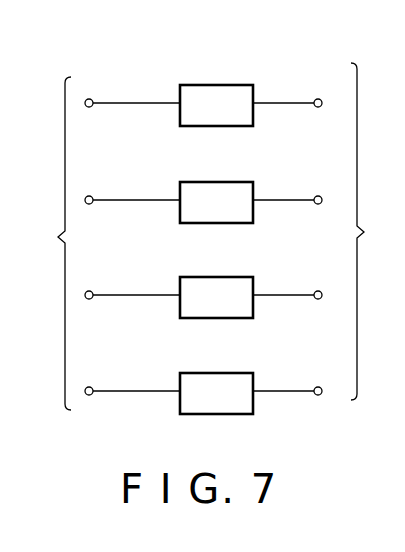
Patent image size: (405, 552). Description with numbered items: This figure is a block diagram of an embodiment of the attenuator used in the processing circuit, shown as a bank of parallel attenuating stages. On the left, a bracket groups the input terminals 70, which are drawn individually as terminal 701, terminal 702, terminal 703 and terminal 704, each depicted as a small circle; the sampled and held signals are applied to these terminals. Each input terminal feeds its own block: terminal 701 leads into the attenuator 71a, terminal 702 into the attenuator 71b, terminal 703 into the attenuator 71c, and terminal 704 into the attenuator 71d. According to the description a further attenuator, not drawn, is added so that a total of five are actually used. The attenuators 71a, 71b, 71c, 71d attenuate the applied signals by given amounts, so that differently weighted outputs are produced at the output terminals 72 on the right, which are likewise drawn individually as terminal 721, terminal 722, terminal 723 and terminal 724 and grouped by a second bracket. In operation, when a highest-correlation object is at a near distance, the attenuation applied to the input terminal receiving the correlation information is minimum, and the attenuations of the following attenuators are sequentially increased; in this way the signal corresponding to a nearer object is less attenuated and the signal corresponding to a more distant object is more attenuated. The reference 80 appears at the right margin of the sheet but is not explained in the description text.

The terminals 70 is at (44, 243).
The terminal 701 is at (126, 87).
The terminal 702 is at (126, 184).
The terminal 703 is at (126, 280).
The terminal 704 is at (126, 376).
The attenuator 71a is at (218, 92).
The attenuator 71b is at (212, 183).
The attenuator 71c is at (212, 280).
The attenuator 71d is at (212, 377).
The terminals 72 is at (377, 231).
The terminal 721 is at (302, 87).
The terminal 722 is at (301, 184).
The terminal 723 is at (299, 280).
The terminal 724 is at (299, 375).
The circuit block 80 is at (395, 304).